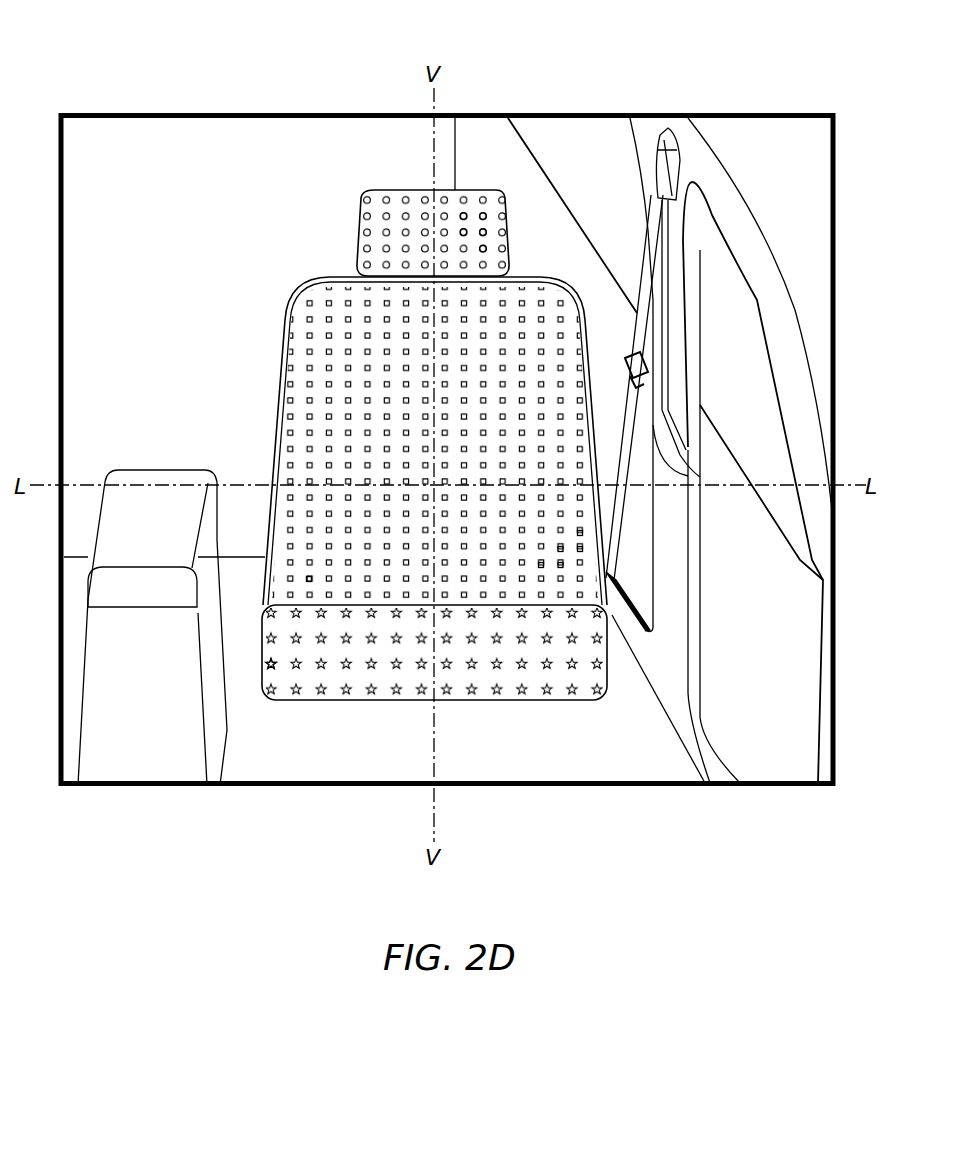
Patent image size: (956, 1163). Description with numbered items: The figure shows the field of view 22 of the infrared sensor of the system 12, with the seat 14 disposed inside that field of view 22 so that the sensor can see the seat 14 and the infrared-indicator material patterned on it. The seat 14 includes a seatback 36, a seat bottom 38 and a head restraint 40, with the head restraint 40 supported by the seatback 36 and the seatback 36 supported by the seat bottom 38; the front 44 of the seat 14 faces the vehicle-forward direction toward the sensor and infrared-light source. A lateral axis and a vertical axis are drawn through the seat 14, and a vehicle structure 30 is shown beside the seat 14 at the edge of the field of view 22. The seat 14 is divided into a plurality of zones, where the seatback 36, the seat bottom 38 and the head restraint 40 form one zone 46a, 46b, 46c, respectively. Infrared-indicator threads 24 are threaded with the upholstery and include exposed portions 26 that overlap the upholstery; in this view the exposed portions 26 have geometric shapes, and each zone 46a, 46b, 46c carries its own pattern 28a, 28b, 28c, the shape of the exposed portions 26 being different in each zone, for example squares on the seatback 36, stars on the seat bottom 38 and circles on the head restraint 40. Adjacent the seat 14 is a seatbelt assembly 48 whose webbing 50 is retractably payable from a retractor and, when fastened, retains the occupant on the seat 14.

The system 12 is at (185, 82).
The seat 14 is at (447, 452).
The field of view 22 is at (776, 113).
The infrared-indicator threads 24 is at (490, 251).
The exposed portions 26 is at (487, 232).
The pattern 28a is at (365, 338).
The pattern 28b is at (505, 705).
The pattern 28c is at (470, 210).
The pillar 30 is at (688, 347).
The seatback 36 is at (396, 442).
The seat bottom 38 is at (371, 685).
The head restraint 40 is at (406, 209).
The front 44 is at (407, 442).
The zone 46a is at (268, 432).
The zone 46b is at (262, 650).
The zone 46c is at (400, 183).
The seatbelt assembly 48 is at (680, 158).
The webbing 50 is at (667, 282).